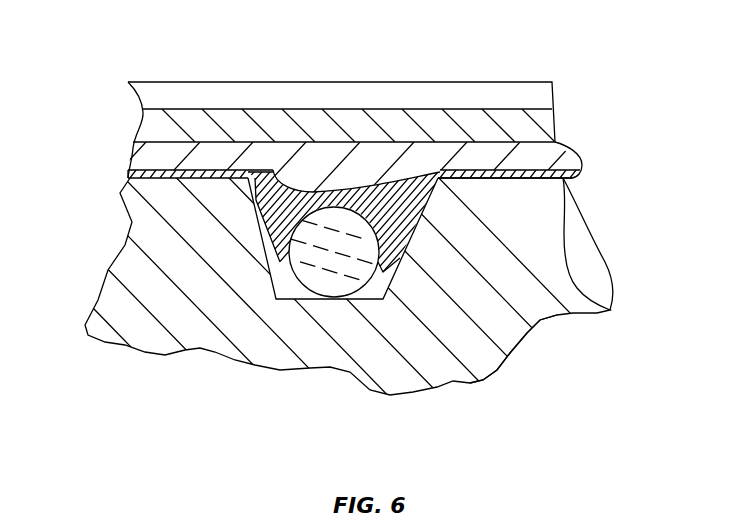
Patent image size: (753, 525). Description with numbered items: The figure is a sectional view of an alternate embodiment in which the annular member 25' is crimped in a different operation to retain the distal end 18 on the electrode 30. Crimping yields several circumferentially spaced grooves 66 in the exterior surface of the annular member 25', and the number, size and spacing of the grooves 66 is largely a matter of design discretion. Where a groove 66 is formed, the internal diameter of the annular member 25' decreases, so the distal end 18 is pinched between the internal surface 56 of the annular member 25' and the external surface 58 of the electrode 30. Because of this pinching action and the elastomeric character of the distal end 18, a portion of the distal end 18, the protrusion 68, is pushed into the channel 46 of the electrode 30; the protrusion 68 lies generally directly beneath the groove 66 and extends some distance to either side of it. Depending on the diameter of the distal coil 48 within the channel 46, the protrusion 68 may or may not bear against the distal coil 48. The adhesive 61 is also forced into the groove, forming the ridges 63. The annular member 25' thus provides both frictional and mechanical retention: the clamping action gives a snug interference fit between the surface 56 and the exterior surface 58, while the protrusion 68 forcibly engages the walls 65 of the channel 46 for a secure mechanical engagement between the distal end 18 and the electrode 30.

The distal end 18 is at (553, 172).
The annular member 25' is at (347, 73).
The electrode 30 is at (582, 247).
The channel 46 is at (368, 292).
The distal coil 48 is at (320, 218).
The internal surface 56 is at (505, 137).
The external surface 58 is at (538, 183).
The adhesive 61 is at (135, 172).
The ridges 63 is at (277, 299).
The walls 65 is at (497, 318).
The grooves 66 is at (174, 88).
The protrusion 68 is at (303, 188).